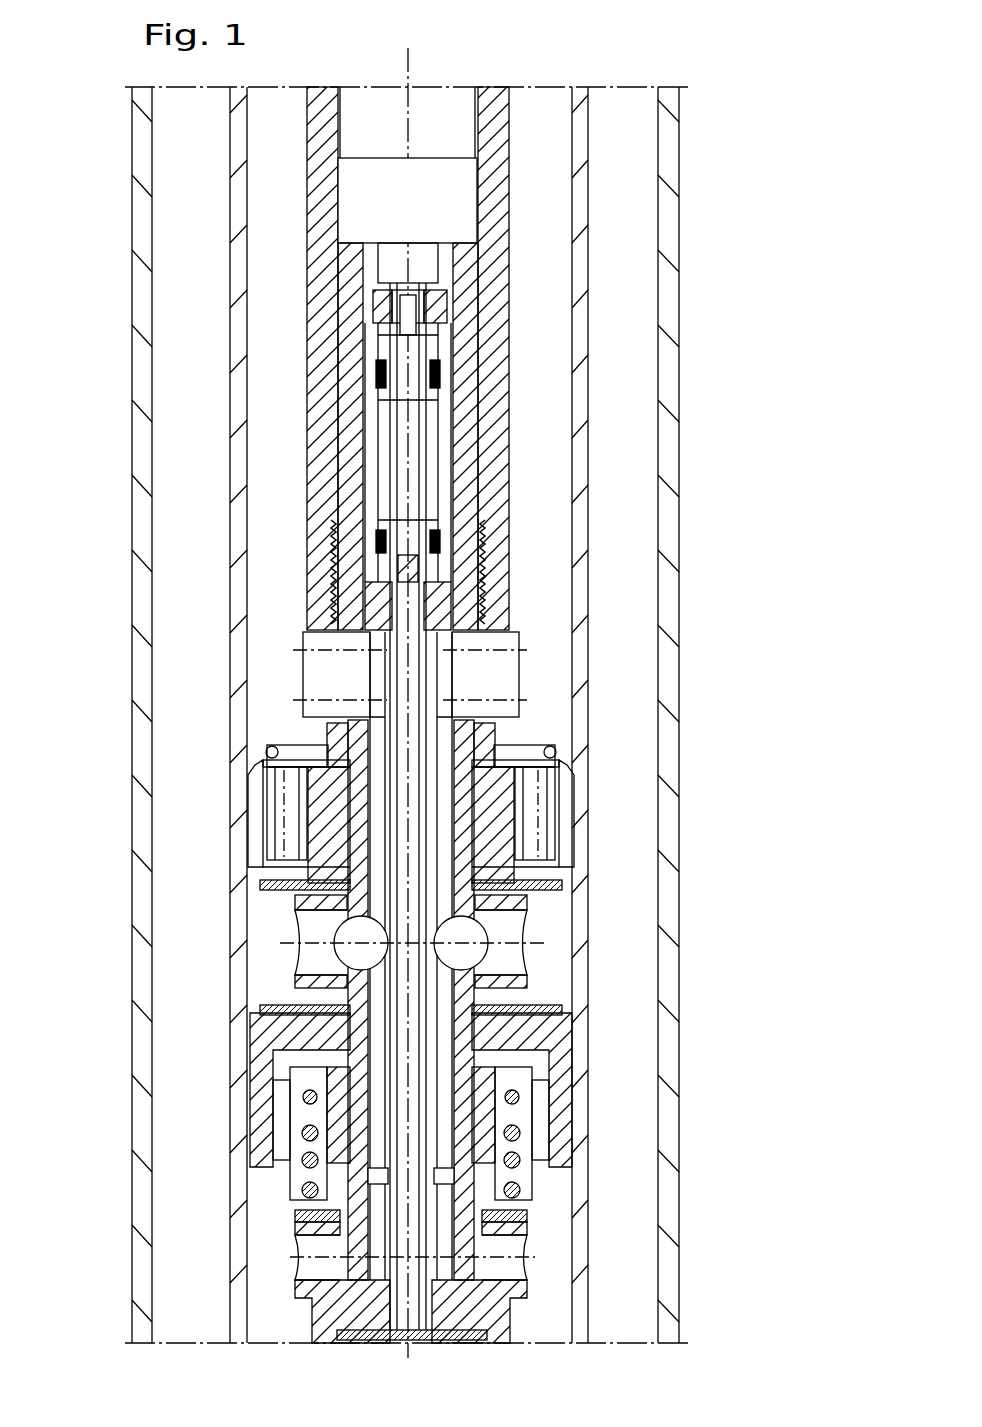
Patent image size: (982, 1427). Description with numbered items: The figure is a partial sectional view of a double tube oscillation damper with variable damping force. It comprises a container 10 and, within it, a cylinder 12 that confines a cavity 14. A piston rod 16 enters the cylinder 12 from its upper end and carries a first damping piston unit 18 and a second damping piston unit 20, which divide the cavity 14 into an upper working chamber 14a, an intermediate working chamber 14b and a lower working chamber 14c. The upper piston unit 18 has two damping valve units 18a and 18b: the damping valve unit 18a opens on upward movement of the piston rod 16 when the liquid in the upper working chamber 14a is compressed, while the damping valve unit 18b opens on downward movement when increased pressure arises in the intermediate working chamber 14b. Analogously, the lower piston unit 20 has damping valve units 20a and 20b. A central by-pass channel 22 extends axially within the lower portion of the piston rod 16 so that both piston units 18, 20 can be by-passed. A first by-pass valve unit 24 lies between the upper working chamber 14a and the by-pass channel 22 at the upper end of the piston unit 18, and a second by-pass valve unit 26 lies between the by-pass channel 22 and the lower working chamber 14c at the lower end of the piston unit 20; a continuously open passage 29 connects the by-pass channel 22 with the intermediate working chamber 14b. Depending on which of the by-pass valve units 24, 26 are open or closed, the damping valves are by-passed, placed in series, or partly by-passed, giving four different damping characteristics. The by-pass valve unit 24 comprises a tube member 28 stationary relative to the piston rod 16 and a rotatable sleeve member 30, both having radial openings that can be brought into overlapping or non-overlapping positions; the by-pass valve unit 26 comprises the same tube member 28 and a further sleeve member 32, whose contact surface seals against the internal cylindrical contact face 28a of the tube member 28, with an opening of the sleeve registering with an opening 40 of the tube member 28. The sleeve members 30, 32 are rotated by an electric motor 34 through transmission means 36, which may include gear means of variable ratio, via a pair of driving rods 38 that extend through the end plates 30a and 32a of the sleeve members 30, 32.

The container 10 is at (665, 345).
The cylinder 12 is at (577, 265).
The cavity 14 is at (543, 473).
The upper working chamber 14a is at (538, 562).
The intermediate working chamber 14b is at (548, 973).
The lower working chamber 14c is at (558, 1307).
The piston rod 16 is at (316, 225).
The first damping piston unit 18 is at (487, 850).
The damping valve unit 18a is at (540, 800).
The damping valve unit 18b is at (270, 835).
The second damping piston unit 20 is at (500, 1052).
The damping valve unit 20a is at (537, 1137).
The damping valve unit 20b is at (265, 1130).
The by-pass channel 22 is at (375, 800).
The first by-pass valve unit 24 is at (507, 693).
The second by-pass valve unit 26 is at (507, 1273).
The tube member 28 is at (337, 540).
The contact face 28a is at (385, 1178).
The passage 29 is at (500, 928).
The sleeve member 30 is at (360, 685).
The end plate 30a is at (337, 617).
The sleeve member 32 is at (372, 1235).
The end plate 32a is at (330, 1308).
The electric motor 34 is at (435, 112).
The transmission means 36 is at (450, 200).
The driving rods 38 is at (430, 682).
The opening 40 is at (353, 1252).